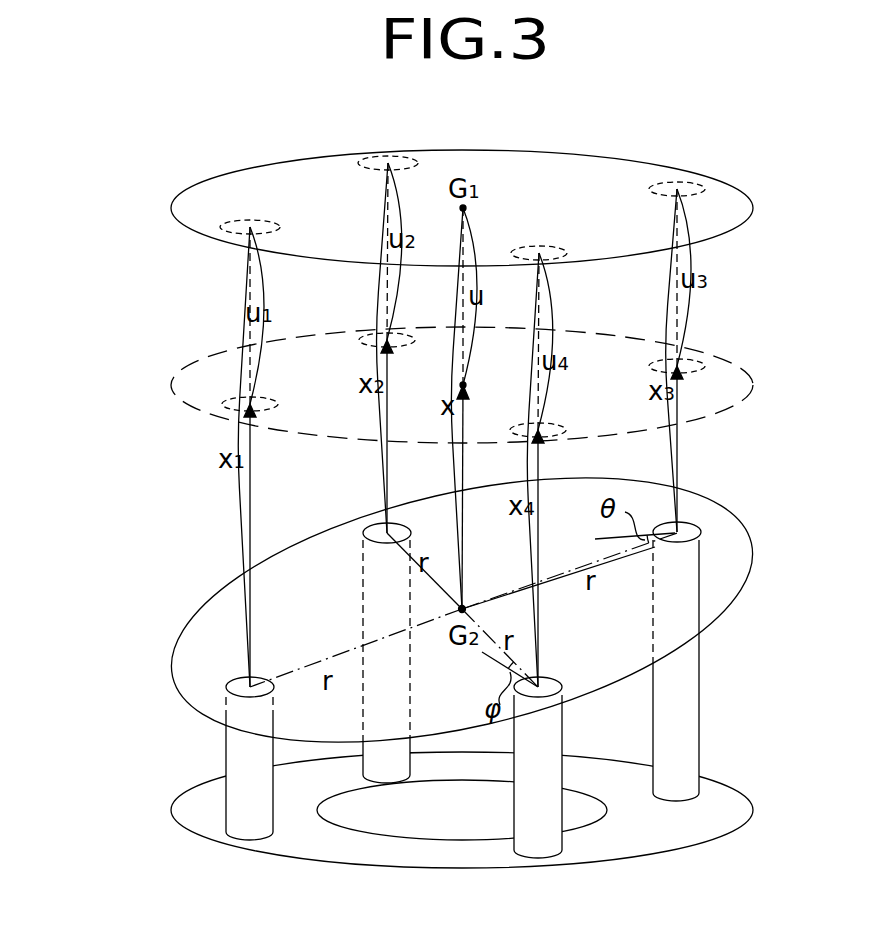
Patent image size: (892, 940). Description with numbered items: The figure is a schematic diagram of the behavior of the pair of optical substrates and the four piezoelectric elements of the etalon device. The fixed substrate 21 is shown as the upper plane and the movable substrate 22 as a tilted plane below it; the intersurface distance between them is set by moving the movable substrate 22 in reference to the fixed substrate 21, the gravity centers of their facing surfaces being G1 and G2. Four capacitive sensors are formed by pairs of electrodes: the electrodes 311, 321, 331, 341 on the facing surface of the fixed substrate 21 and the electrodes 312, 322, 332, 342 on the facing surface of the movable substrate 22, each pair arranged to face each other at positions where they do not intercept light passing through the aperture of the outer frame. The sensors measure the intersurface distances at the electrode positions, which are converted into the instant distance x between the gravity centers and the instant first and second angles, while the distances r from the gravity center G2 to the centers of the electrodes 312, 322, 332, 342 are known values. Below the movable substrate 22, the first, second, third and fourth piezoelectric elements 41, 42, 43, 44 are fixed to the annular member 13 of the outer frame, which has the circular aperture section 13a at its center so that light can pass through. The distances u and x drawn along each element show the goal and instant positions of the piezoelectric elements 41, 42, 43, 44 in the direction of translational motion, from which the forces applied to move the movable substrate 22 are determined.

The fixed substrate 21 is at (232, 185).
The movable substrate 22 is at (188, 660).
The electrode of the first capacitive sensor 311 is at (262, 222).
The electrode of the second capacitive sensor 321 is at (398, 160).
The electrode of the third capacitive sensor 331 is at (690, 186).
The electrode of the fourth capacitive sensor 341 is at (550, 250).
The electrode of the first capacitive sensor 312 is at (228, 714).
The electrode of the second capacitive sensor 322 is at (383, 528).
The electrode of the third capacitive sensor 332 is at (700, 530).
The electrode of the fourth capacitive sensor 342 is at (565, 690).
The annular member 13 is at (185, 815).
The aperture section 13a is at (430, 830).
The first piezoelectric element 41 is at (196, 784).
The second piezoelectric element 42 is at (350, 624).
The third piezoelectric element 43 is at (732, 625).
The fourth piezoelectric element 44 is at (577, 790).